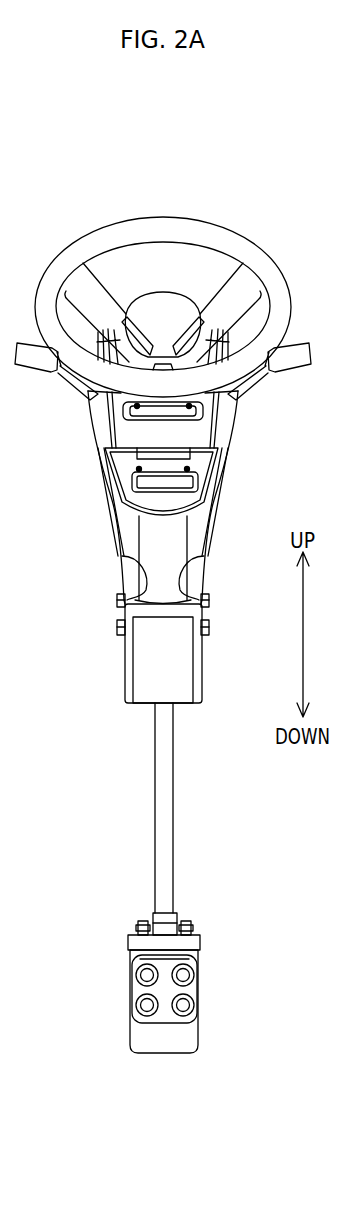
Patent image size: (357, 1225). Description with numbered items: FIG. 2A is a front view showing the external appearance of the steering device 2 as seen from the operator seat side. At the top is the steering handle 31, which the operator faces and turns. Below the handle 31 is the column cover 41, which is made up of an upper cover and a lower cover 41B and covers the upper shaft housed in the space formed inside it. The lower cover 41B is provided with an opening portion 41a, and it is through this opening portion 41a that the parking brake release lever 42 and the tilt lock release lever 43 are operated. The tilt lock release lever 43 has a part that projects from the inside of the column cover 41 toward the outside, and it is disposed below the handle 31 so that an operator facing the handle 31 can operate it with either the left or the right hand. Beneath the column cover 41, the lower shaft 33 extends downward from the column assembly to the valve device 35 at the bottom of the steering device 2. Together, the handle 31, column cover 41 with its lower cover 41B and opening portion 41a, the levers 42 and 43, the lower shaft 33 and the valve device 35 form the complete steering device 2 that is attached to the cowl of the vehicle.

The steering device 2 is at (86, 161).
The steering handle 31 is at (288, 309).
The lower shaft 33 is at (159, 802).
The valve device 35 is at (132, 985).
The column cover 41 is at (252, 412).
The opening portion 41a is at (208, 486).
The lower cover 41B is at (178, 529).
The parking brake release lever 42 is at (121, 466).
The tilt lock release lever 43 is at (132, 493).